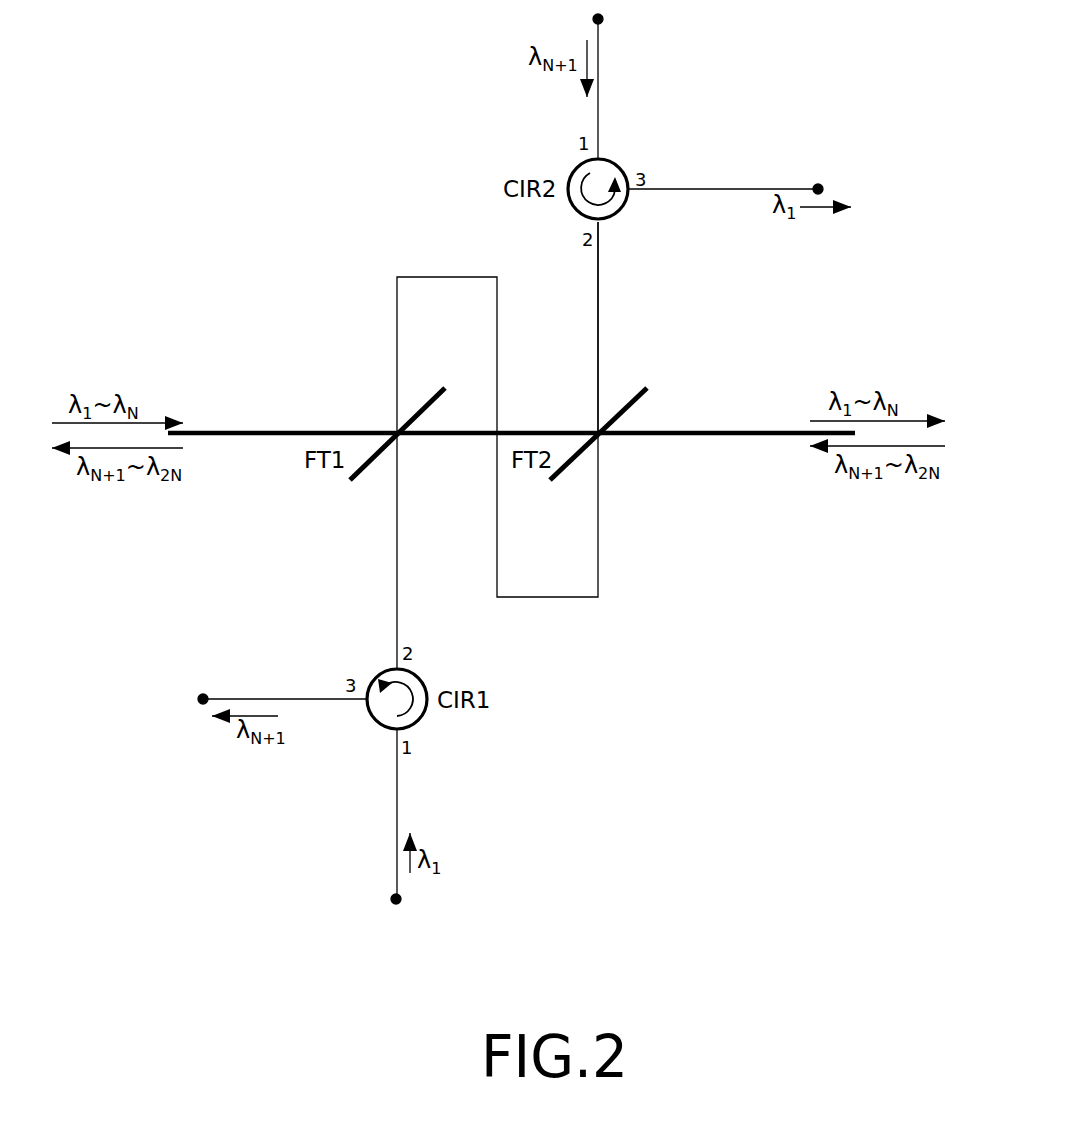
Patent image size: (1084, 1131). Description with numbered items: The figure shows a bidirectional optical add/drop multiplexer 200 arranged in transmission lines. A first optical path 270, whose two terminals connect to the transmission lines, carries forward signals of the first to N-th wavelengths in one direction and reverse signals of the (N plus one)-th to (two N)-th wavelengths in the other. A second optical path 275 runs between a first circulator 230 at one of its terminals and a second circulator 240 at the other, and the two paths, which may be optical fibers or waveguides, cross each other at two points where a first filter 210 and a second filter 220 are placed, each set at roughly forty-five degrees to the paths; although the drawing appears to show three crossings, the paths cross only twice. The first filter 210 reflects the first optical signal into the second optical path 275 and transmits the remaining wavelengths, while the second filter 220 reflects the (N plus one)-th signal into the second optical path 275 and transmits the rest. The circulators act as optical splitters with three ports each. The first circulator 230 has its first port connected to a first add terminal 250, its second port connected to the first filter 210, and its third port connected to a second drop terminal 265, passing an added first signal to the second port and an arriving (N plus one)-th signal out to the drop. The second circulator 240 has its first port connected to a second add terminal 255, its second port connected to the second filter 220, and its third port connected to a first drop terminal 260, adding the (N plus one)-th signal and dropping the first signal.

The bidirectional optical add/drop multiplexer 200 is at (276, 94).
The first filter 210 is at (444, 386).
The second filter 220 is at (646, 386).
The first circulator 230 is at (378, 724).
The second circulator 240 is at (621, 168).
The first add terminal 250 is at (403, 900).
The second add terminal 255 is at (606, 20).
The first drop terminal 260 is at (817, 182).
The second drop terminal 265 is at (203, 692).
The first optical path 270 is at (270, 430).
The second optical path 275 is at (398, 603).